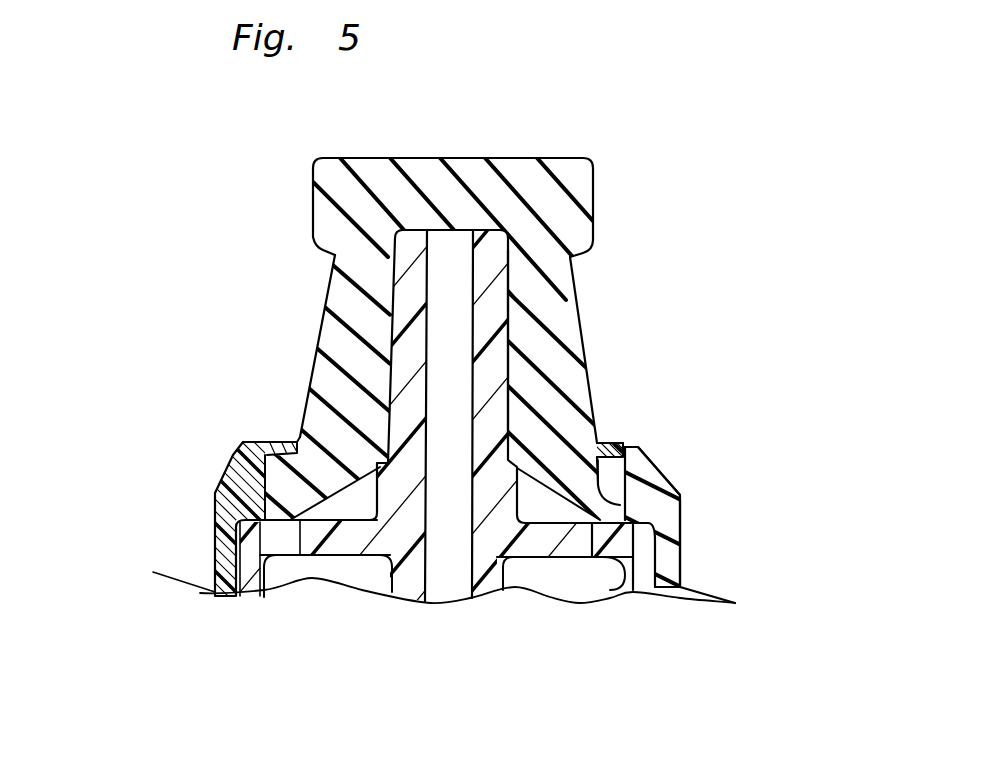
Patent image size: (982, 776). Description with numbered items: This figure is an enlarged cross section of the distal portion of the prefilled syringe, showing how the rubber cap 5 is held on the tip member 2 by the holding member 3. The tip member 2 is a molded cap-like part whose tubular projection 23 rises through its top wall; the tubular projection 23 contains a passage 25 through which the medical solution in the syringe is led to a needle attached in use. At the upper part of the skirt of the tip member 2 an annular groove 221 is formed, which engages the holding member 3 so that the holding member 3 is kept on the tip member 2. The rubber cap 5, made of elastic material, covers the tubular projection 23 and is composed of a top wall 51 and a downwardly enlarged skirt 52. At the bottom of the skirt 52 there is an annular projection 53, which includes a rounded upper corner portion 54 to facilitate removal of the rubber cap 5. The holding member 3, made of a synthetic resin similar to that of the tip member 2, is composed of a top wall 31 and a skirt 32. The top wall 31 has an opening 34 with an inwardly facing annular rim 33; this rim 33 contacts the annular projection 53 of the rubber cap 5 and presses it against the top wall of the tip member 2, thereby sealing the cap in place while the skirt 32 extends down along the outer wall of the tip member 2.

The tip member 2 is at (511, 326).
The tubular projection 23 is at (508, 372).
The passage 25 is at (473, 493).
The annular groove 221 is at (228, 548).
The holding member 3 is at (695, 502).
The top wall 31 is at (683, 458).
The skirt 32 is at (678, 565).
The inwardly facing annular rim 33 is at (610, 447).
The opening 34 is at (612, 510).
The rubber cap 5 is at (327, 285).
The top wall 51 is at (313, 182).
The skirt 52 is at (318, 352).
The annular projection 53 is at (228, 462).
The rounded upper corner portion 54 is at (243, 442).